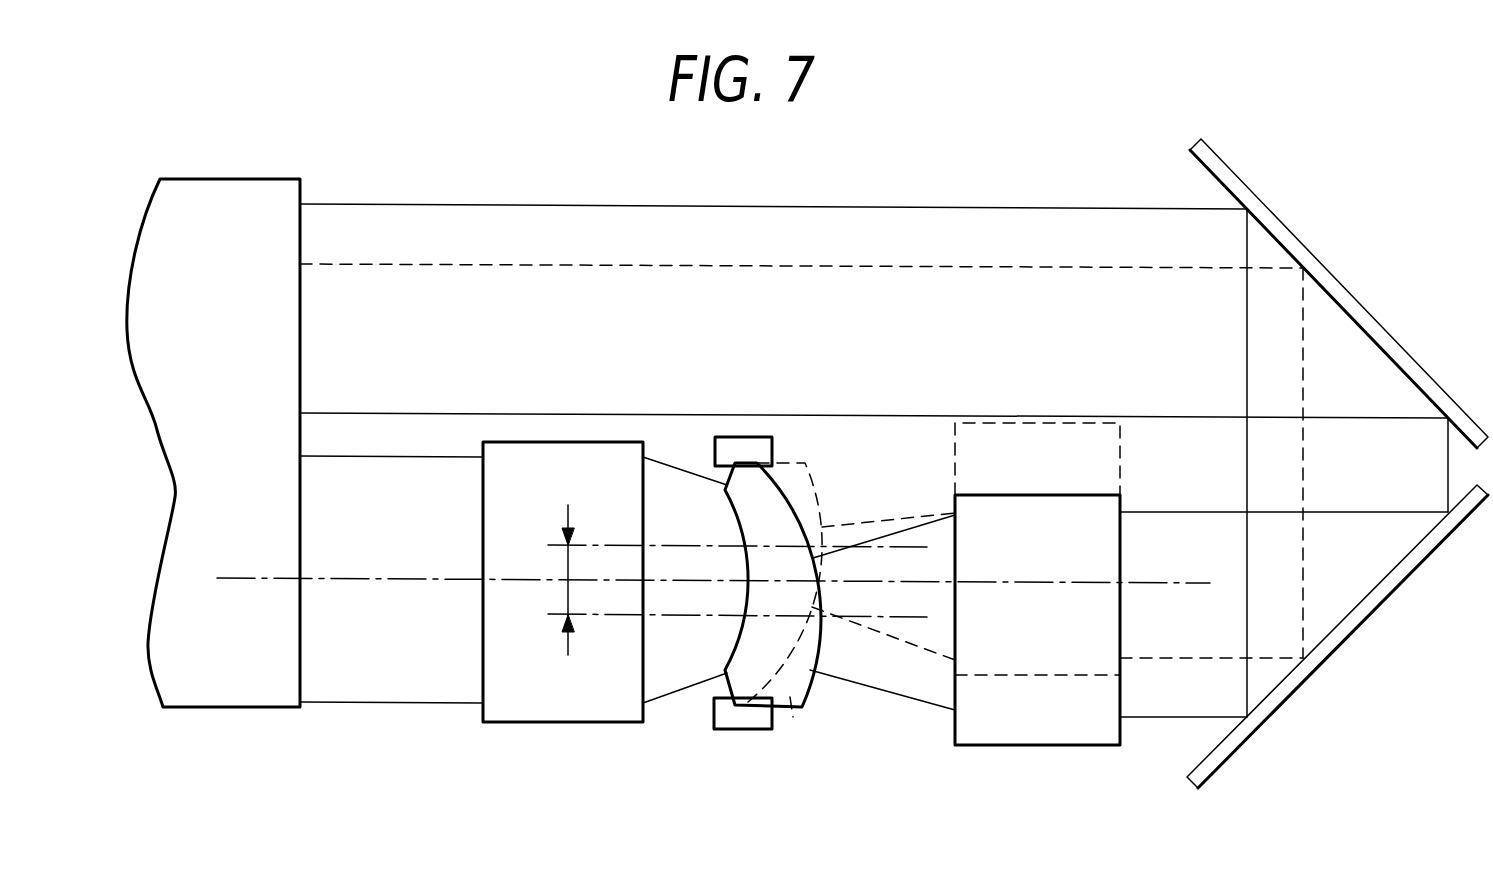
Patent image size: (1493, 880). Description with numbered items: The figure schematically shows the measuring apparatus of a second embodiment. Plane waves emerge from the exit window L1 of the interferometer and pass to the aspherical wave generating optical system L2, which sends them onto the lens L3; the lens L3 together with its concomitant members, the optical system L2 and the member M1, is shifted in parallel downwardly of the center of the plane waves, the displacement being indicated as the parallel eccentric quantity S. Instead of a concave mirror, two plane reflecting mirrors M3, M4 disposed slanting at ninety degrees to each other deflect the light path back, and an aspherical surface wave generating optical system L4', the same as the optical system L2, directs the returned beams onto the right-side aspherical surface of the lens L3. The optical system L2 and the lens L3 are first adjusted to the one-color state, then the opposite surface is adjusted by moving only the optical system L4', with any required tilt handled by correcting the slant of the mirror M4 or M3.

The exit window L1 is at (228, 702).
The aspherical wave generating optical system L2 is at (545, 708).
The lens L3 is at (792, 707).
The aspherical surface wave generating optical system L4' is at (1201, 620).
The member concomitant with the lens M1 is at (736, 442).
The plane reflecting mirror M3 is at (1367, 320).
The plane reflecting mirror M4 is at (1317, 660).
The parallel eccentric quantity S is at (728, 580).